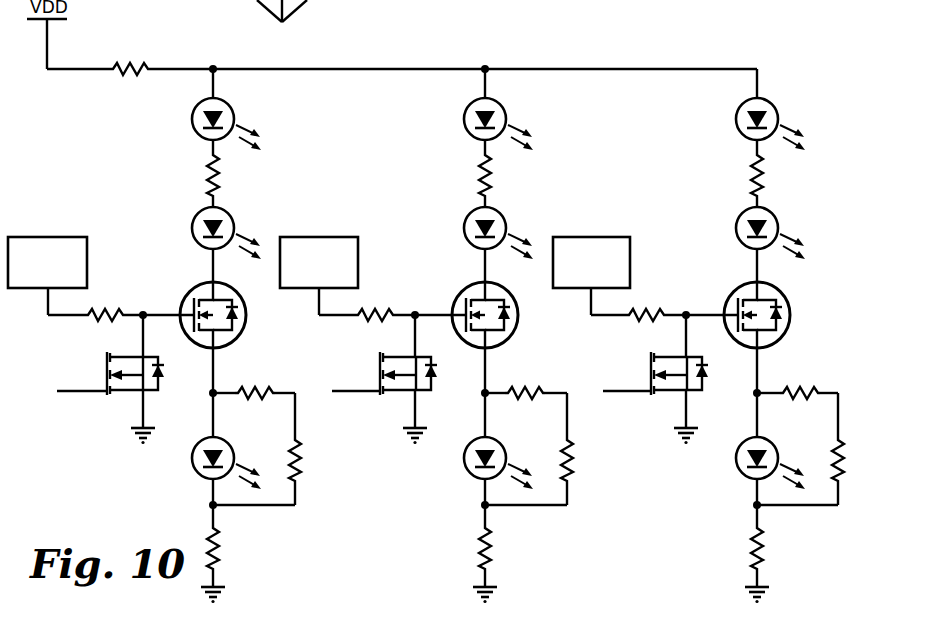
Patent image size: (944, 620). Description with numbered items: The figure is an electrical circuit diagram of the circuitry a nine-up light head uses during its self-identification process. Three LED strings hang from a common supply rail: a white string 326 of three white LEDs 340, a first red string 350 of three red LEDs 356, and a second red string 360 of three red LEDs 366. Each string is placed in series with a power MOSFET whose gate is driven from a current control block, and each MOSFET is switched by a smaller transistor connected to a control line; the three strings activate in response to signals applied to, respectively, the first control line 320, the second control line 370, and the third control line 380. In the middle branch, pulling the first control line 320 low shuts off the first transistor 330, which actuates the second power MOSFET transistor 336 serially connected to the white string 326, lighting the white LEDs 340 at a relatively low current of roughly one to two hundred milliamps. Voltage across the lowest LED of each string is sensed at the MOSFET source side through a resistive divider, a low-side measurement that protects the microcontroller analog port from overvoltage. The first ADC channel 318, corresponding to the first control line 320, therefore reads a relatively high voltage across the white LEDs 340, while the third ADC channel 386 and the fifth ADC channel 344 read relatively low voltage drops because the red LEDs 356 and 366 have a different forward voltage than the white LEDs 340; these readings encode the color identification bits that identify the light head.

The first red string 350 is at (237, 93).
The string of LEDs 326 is at (509, 93).
The second red string 360 is at (781, 93).
The red LEDs 356 is at (198, 104).
The white LEDs 340 is at (470, 104).
The red LEDs 366 is at (742, 104).
The second power MOSFET transistor 336 is at (461, 292).
The first transistor 330 is at (400, 356).
The first control line L0 320 is at (357, 389).
The control line L1 370 is at (78, 390).
The control line L2 380 is at (620, 390).
The ADC3 386 is at (323, 440).
The ADC0 318 is at (597, 440).
The ADC5 344 is at (866, 440).